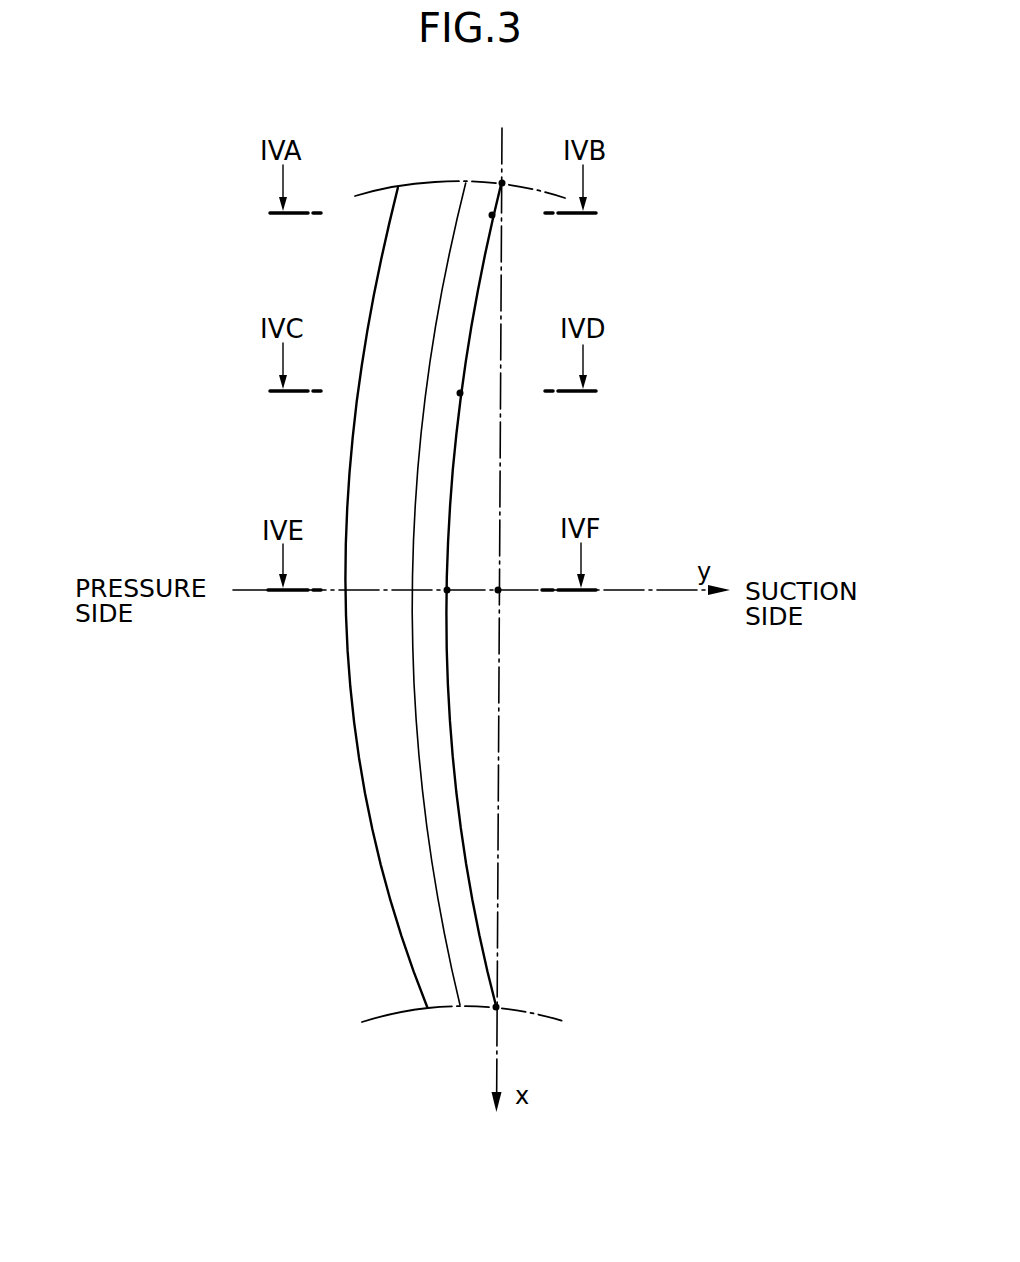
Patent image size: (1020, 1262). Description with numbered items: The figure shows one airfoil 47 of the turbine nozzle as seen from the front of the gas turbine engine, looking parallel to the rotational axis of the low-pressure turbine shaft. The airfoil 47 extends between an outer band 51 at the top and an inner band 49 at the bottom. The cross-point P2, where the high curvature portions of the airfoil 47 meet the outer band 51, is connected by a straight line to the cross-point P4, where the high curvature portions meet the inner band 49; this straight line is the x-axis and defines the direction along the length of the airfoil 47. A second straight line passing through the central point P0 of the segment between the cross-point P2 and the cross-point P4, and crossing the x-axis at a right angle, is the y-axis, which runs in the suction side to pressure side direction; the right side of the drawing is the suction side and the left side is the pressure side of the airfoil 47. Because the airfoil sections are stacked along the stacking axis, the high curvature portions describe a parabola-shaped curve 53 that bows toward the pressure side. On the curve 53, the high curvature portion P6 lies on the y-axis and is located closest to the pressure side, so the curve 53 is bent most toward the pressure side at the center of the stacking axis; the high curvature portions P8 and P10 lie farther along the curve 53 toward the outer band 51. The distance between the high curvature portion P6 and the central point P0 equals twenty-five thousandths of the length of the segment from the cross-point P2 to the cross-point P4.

The airfoil 47 is at (365, 800).
The inner band 49 is at (393, 1008).
The outer band 51 is at (370, 192).
The curve 53 is at (486, 295).
The central point P0 is at (498, 590).
The cross-point P2 is at (502, 183).
The cross-point P4 is at (496, 1007).
The high curvature portion P6 is at (447, 590).
The high curvature portion P8 is at (492, 215).
The high curvature portion P10 is at (460, 393).